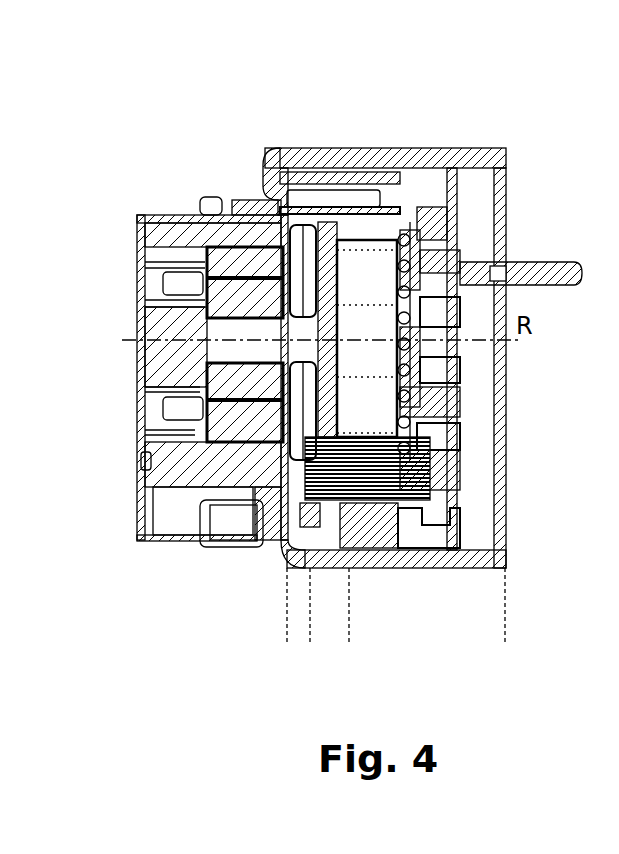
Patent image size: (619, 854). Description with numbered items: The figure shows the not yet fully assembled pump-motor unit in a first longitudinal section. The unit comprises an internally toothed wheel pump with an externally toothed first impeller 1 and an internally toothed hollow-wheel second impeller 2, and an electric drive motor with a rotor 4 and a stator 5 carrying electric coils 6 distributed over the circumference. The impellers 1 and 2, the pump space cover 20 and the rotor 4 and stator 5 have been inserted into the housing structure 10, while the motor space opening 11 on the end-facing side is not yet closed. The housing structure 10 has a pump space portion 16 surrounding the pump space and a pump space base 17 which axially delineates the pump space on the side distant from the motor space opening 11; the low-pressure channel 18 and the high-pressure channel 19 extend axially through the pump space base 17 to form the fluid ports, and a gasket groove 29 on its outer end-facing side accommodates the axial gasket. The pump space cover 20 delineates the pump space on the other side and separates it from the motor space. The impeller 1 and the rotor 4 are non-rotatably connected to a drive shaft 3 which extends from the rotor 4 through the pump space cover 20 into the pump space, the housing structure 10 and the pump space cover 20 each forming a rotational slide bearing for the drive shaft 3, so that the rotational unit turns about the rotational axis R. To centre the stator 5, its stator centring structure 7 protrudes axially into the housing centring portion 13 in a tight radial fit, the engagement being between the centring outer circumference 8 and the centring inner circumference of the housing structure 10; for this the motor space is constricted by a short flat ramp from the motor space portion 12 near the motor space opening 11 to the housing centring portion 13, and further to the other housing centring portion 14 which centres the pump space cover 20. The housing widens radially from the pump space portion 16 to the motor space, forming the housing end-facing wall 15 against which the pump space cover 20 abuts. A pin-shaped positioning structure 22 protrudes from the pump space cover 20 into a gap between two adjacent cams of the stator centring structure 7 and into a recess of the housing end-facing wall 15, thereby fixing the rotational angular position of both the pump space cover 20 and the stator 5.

The first impeller 1 is at (192, 228).
The second impeller 2 is at (238, 258).
The drive shaft 3 is at (275, 255).
The rotor 4 is at (420, 412).
The stator 5 is at (463, 433).
The electric coils 6 is at (463, 457).
The stator centring structure 7 is at (390, 148).
The centring outer circumference 8 is at (360, 555).
The housing structure 10 is at (505, 128).
The motor space opening 11 is at (517, 217).
The motor space portion 12 is at (505, 640).
The housing centring portion 13 is at (349, 640).
The other housing centring portion 14 is at (310, 640).
The housing end-facing wall 15 is at (267, 518).
The pump space portion 16 is at (233, 453).
The pump space base 17 is at (137, 317).
The low-pressure channel 18 is at (140, 415).
The high-pressure channel 19 is at (137, 283).
The pump space cover 20 is at (287, 148).
The positioning structure 22 is at (318, 148).
The gasket groove 29 is at (141, 462).